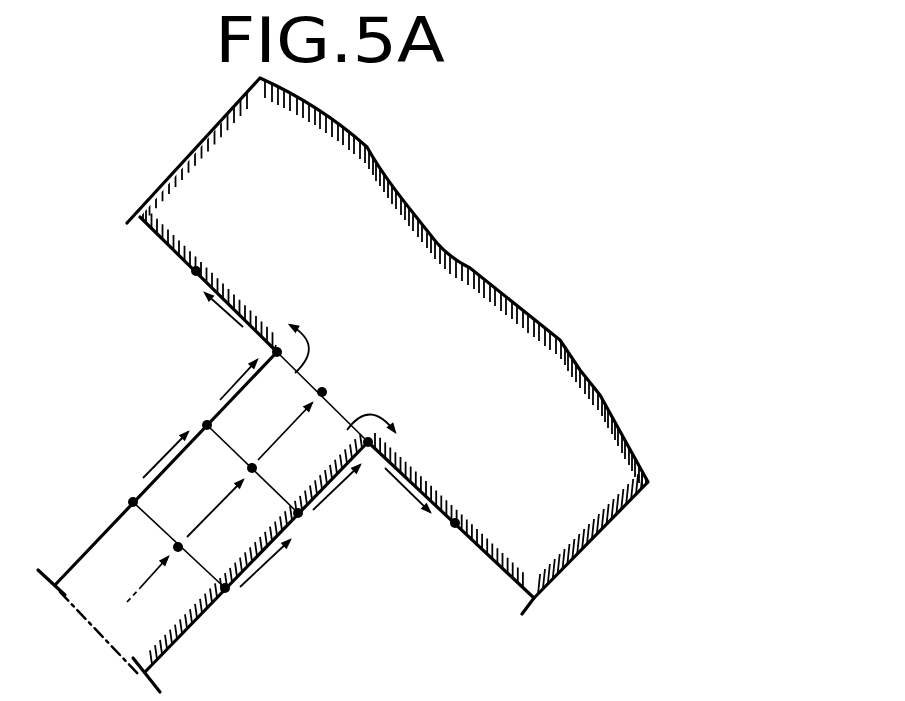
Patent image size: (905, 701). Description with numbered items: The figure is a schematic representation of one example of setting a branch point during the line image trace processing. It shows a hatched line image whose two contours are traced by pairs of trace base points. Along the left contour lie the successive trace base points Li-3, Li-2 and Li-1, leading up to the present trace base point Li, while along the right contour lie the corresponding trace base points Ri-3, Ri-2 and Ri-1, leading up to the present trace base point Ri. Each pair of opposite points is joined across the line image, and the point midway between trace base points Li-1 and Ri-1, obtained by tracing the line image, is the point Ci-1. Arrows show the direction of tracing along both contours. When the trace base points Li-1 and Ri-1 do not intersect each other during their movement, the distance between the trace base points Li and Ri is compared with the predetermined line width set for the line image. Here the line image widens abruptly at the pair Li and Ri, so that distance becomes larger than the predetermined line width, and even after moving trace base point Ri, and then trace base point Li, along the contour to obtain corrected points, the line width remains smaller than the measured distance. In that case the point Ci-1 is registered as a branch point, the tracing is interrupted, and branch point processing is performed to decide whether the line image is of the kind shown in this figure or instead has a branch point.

The trace base point Li is at (174, 272).
The trace base point Li-1 is at (242, 347).
The trace base point Li-2 is at (167, 421).
The trace base point Li-3 is at (96, 501).
The branch point Ci-1 is at (352, 377).
The trace base point Ri-1 is at (370, 480).
The trace base point Ri-2 is at (323, 536).
The trace base point Ri-3 is at (241, 615).
The trace base point Ri is at (441, 540).